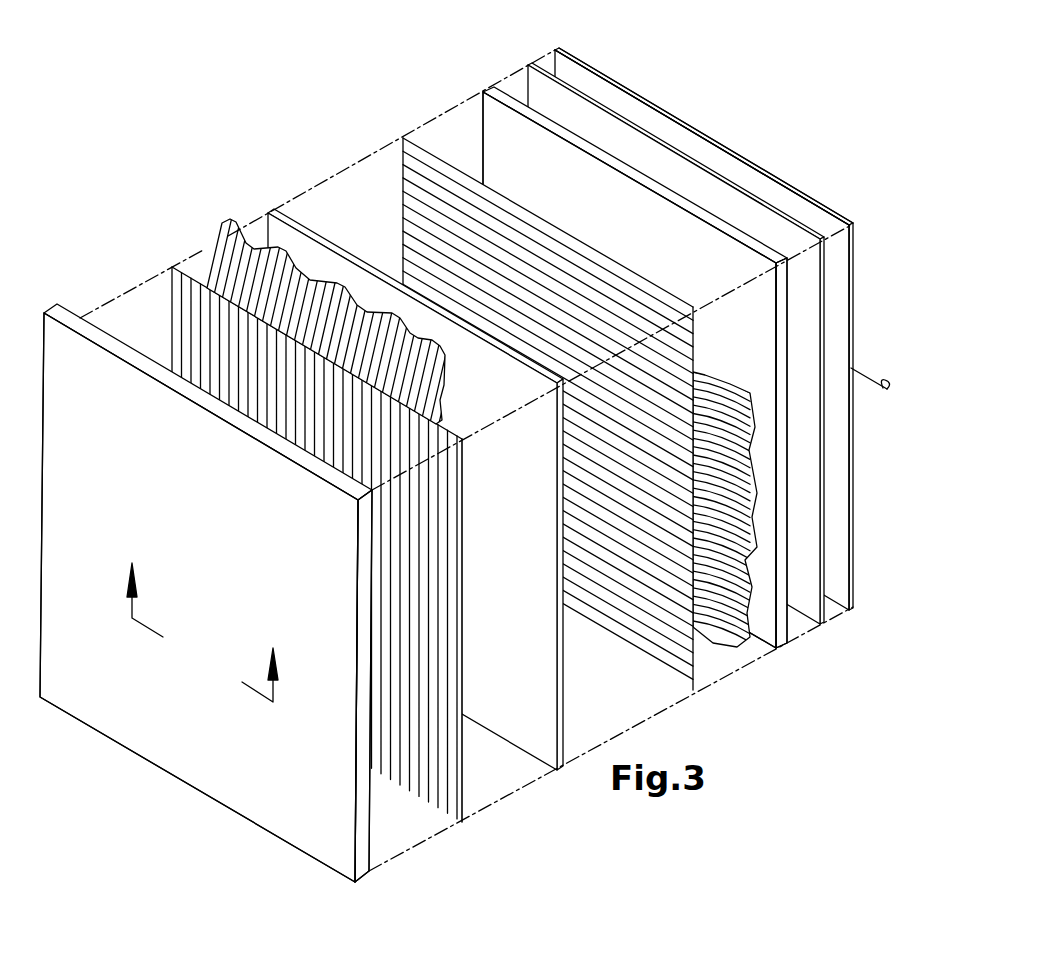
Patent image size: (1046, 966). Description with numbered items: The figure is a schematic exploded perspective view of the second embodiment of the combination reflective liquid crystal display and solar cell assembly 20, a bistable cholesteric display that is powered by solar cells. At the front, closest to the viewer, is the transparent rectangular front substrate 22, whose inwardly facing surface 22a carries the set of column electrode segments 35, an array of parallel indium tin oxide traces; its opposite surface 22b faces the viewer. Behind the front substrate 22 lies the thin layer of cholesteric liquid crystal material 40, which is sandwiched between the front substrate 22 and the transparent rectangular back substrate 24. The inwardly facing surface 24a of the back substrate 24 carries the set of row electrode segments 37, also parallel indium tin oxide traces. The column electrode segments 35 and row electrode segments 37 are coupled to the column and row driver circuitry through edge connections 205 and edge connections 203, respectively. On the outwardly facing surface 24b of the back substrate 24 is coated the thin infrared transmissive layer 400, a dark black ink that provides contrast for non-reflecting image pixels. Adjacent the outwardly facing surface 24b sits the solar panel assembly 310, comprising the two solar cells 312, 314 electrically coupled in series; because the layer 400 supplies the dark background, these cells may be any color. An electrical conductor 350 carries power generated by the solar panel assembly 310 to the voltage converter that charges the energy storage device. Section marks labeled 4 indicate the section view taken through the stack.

The combination reflective liquid crystal display and solar cell assembly 20 is at (763, 89).
The front substrate 22 is at (189, 758).
The inwardly facing surface of the front substrate 22a is at (370, 842).
The front face of first collector plate 22b is at (293, 810).
The back substrate 24 is at (638, 216).
The inwardly facing surface of the back substrate 24a is at (678, 236).
The outwardly facing surface of the back substrate 24b is at (792, 625).
The column electrode segments 35 is at (428, 782).
The row electrode segments 37 is at (690, 668).
The cholesteric liquid crystal material 40 is at (530, 676).
The edge connections 203 is at (734, 650).
The edge connections 205 is at (217, 232).
The solar panel assembly 310 is at (898, 210).
The solar cell 312 is at (604, 95).
The solar cell 314 is at (808, 212).
The electrical conductor 350 is at (851, 368).
The infrared transmissive layer 400 is at (768, 222).
The section line 4- 4 is at (201, 621).